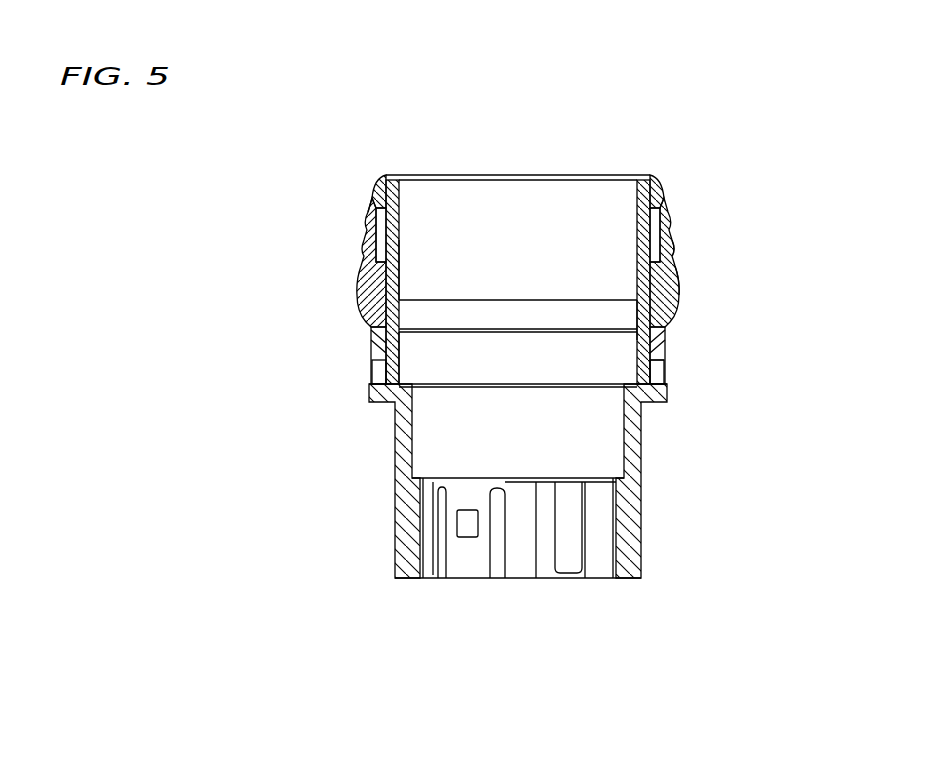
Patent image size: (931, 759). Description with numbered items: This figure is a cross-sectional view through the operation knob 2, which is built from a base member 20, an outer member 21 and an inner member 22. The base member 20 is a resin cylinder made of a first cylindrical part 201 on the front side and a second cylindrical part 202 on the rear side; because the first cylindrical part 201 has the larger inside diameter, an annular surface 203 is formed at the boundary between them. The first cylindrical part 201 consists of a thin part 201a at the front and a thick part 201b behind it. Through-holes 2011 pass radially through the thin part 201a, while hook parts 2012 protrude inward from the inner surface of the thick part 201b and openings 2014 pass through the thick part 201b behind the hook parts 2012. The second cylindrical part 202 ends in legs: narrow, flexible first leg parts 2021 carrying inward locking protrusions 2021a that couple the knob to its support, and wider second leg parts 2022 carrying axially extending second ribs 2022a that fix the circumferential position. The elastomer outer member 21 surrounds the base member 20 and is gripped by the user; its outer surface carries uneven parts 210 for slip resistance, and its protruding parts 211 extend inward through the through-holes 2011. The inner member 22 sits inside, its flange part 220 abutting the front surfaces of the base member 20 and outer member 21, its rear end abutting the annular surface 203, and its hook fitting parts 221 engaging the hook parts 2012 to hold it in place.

The operation knob 2 is at (687, 175).
The base member 20 is at (362, 403).
The first cylindrical part 201 is at (262, 233).
The thin part 201a is at (383, 245).
The thick part 201b is at (385, 350).
The through-holes 2011 is at (399, 268).
The hook parts 2012 is at (388, 350).
The openings 2014 is at (662, 374).
The second cylindrical part 202 is at (408, 447).
The first leg parts 2021 is at (460, 563).
The locking protrusions 2021a is at (458, 531).
The second leg parts 2022 is at (598, 563).
The second ribs 2022a is at (570, 560).
The annular surface 203 is at (643, 403).
The outer member 21 is at (673, 247).
The uneven parts 210 is at (673, 253).
The protruding parts 211 is at (678, 288).
The inner member 22 is at (387, 172).
The flange part 220 is at (380, 200).
The hook fitting parts 221 is at (636, 338).